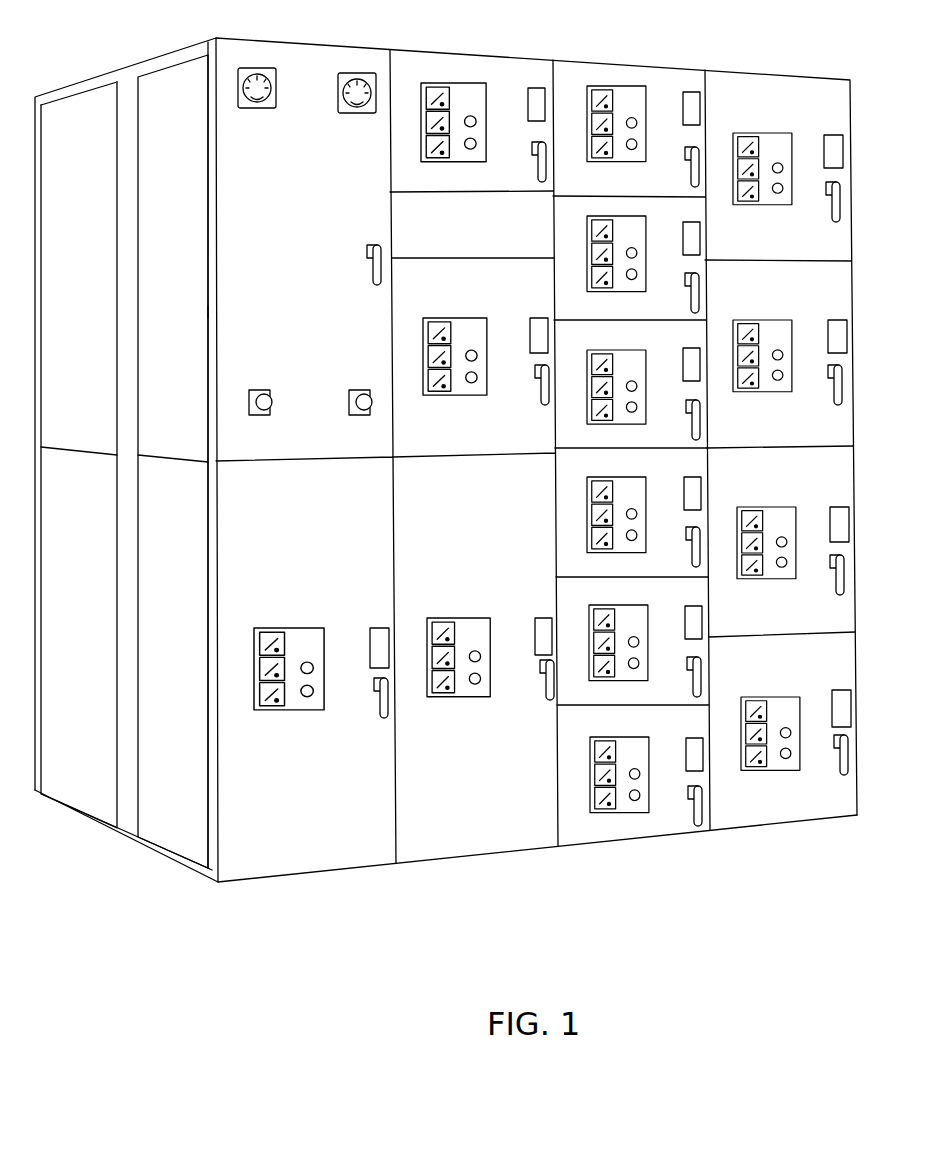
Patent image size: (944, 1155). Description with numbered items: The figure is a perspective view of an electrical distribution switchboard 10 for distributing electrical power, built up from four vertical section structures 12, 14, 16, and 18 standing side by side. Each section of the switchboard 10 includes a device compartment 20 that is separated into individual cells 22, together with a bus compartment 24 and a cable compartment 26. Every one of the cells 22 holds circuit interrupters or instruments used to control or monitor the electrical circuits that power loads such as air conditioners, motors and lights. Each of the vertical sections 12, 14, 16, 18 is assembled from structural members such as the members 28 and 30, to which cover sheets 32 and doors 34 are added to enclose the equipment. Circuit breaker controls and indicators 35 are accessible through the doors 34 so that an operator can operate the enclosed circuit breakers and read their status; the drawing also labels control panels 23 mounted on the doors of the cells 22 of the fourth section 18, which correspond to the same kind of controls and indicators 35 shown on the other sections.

The electrical distribution switchboard 10 is at (570, 930).
The vertical section structure 12 is at (327, 43).
The vertical section structure 14 is at (495, 55).
The vertical section structure 16 is at (655, 62).
The vertical section structure 18 is at (799, 73).
The device compartment 20 is at (193, 42).
The cells 22 is at (853, 243).
The control panel 23 is at (779, 203).
The bus compartment 24 is at (128, 63).
The cable compartment 26 is at (72, 80).
The structural member 28 is at (208, 135).
The structural member 30 is at (90, 82).
The cover sheets 32 is at (100, 290).
The doors 34 is at (355, 858).
The circuit breaker controls and indicators 35 is at (480, 95).